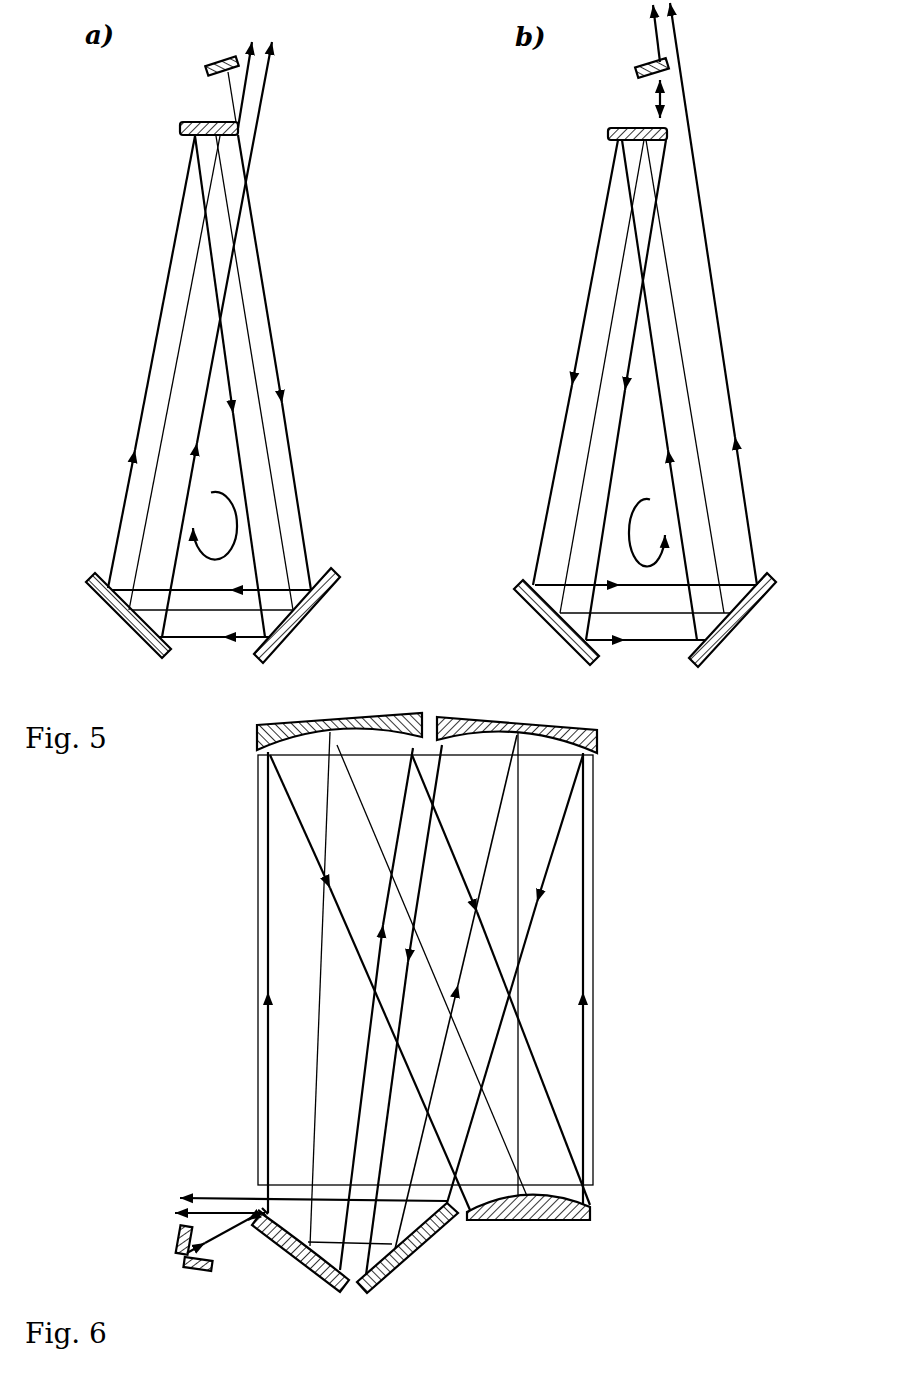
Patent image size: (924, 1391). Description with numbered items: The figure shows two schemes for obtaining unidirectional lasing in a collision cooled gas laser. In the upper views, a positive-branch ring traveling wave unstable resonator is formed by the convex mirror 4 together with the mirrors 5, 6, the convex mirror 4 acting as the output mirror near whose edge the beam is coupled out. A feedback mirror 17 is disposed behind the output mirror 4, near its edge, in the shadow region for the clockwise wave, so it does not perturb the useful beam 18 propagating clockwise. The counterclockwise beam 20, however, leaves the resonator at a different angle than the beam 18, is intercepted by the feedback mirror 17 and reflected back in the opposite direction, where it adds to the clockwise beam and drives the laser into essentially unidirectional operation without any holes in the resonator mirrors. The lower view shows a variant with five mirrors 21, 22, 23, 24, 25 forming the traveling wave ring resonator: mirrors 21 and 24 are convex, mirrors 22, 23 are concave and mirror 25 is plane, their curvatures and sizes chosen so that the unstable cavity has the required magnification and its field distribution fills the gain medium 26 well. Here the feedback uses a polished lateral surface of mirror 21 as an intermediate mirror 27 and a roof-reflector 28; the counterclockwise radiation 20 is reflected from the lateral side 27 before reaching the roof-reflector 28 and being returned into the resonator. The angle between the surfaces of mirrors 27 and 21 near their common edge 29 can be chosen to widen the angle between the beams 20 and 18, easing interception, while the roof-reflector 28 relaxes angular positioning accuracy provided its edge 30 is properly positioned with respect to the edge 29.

In FIG. 5, the convex mirror 4 is at (183, 121).
In FIG. 5, the mirror 5 is at (293, 627).
In FIG. 5, the mirror 6 is at (127, 633).
In FIG. 5, the feedback mirror 17 is at (212, 62).
In FIG. 5, the useful beam 18 is at (258, 98).
In FIG. 6, the useful beam 18 is at (176, 1200).
In FIG. 5, the counterclockwise beam 20 is at (672, 53).
In FIG. 6, the counterclockwise beam 20 is at (218, 1238).
In FIG. 6, the mirror 21 is at (290, 1258).
In FIG. 6, the mirror 22 is at (327, 725).
In FIG. 6, the mirror 23 is at (518, 734).
In FIG. 6, the mirror 24 is at (522, 1222).
In FIG. 6, the mirror 25 is at (405, 1264).
In FIG. 6, the gain medium 26 is at (590, 912).
In FIG. 6, the intermediate mirror 27 is at (262, 1207).
In FIG. 6, the roof-reflector 28 is at (196, 1271).
In FIG. 6, the common edge 29 is at (262, 1208).
In FIG. 6, the edge 30 is at (177, 1250).